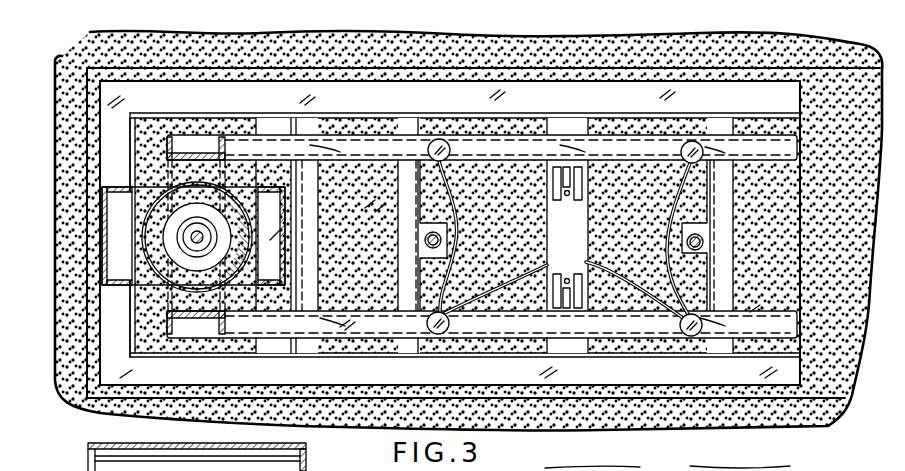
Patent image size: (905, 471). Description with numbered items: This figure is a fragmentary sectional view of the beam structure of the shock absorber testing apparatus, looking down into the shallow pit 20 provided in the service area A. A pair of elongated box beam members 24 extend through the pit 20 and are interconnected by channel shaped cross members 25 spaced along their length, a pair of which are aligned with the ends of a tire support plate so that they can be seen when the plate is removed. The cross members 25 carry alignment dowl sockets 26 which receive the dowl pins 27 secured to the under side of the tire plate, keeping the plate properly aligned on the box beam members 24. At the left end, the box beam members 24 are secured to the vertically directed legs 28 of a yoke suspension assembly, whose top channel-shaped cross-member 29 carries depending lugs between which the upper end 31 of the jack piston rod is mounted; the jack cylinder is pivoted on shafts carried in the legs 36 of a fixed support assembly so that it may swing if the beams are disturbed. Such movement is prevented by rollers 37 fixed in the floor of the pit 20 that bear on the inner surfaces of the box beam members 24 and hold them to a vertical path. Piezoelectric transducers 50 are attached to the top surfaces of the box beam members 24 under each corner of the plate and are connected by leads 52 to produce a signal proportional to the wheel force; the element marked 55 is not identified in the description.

The pit 20 is at (654, 74).
The elongated box beam members 24 is at (800, 147).
The cross members 25 is at (404, 223).
The alignment dowl sockets 26 is at (440, 226).
The dowl pins 27 is at (425, 240).
The legs 28 is at (190, 153).
The legs of fixed support assembly 36 is at (102, 232).
The rollers 37 is at (567, 167).
The piezoelectric transducers 50 is at (441, 139).
The leads 52 is at (486, 292).
The lid 55 is at (105, 443).
The top channel-shaped cross-member 29 is at (650, 466).
The upper end of jack piston rod 31 is at (737, 461).
The service area A is at (806, 422).